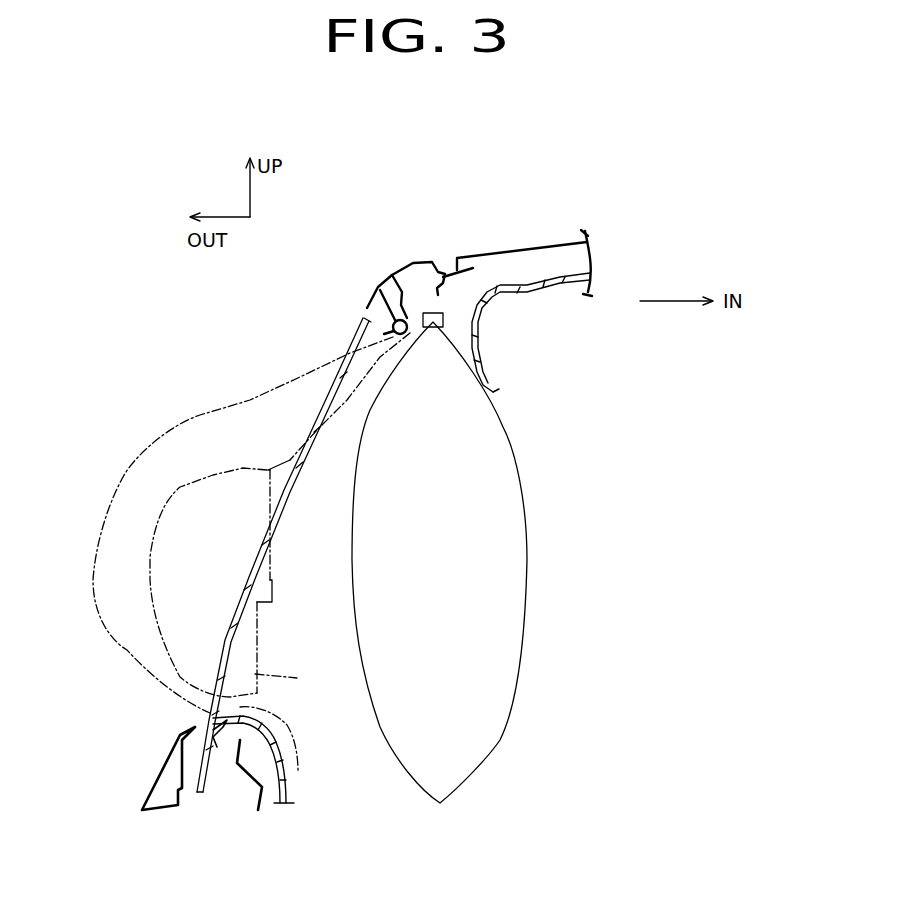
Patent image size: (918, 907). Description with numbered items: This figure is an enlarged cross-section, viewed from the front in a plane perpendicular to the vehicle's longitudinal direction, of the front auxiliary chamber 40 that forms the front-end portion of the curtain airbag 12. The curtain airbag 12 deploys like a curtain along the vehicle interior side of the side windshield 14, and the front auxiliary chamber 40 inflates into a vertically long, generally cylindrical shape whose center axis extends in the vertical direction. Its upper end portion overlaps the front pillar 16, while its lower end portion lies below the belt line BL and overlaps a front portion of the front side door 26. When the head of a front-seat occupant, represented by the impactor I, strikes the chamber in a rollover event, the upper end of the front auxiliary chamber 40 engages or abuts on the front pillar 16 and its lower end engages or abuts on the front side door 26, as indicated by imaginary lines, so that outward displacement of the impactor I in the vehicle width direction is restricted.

The front pillar 16 is at (415, 255).
The side windshield 14 is at (287, 497).
The front auxiliary chamber 40 is at (227, 407).
The curtain airbag 12 is at (532, 544).
The impactor I is at (240, 660).
The belt line BL is at (290, 740).
The front side door 26 is at (300, 783).